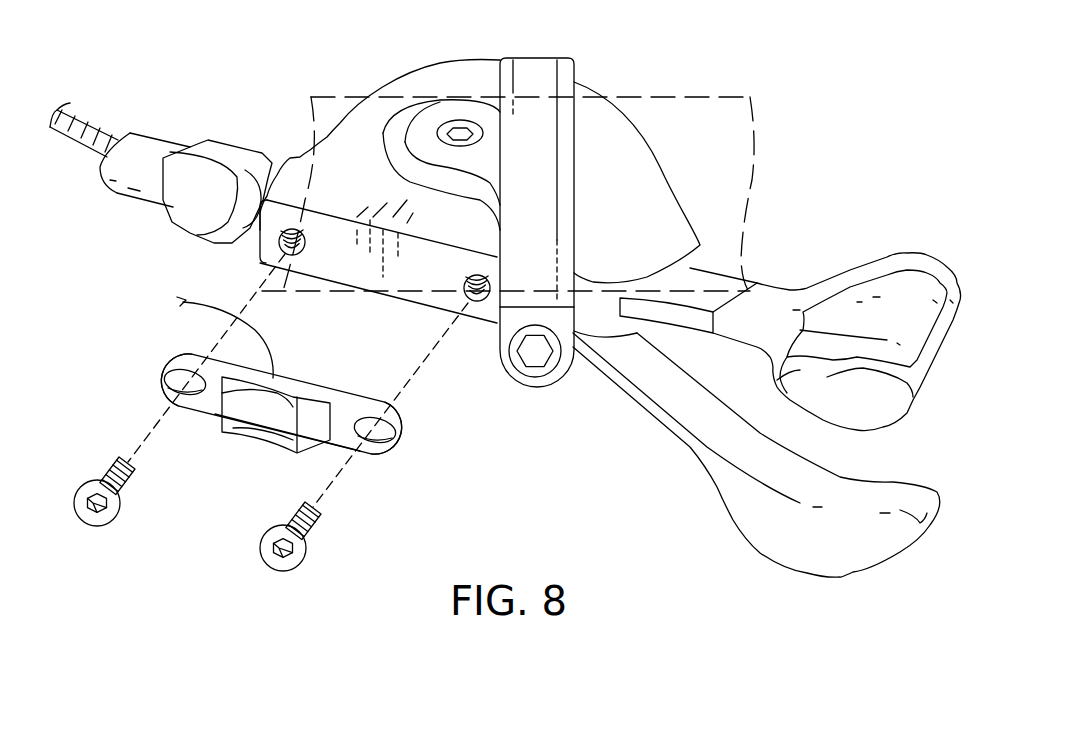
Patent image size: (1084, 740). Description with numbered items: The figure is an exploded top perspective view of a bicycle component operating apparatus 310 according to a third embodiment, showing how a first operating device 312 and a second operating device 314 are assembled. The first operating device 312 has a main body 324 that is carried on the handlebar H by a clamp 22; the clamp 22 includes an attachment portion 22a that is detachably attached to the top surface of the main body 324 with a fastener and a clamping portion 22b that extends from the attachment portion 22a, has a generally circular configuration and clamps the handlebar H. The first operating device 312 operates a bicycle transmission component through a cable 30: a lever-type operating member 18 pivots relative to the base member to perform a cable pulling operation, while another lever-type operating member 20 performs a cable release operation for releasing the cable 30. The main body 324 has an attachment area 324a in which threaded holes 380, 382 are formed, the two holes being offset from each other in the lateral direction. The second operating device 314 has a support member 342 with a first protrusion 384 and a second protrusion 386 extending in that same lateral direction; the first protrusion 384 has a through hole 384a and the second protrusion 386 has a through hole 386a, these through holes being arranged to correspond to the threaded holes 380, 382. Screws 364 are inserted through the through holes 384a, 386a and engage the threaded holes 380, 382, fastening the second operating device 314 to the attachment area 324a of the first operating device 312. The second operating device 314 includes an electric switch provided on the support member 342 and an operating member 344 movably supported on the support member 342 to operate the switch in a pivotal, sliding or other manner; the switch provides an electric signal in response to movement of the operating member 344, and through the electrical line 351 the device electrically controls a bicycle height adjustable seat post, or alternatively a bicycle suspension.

The bicycle component operating apparatus 310 is at (700, 58).
The first operating device 312 is at (378, 78).
The main body 324 is at (462, 62).
The attachment area 324a is at (267, 250).
The clamp 22 is at (585, 219).
The attachment portion 22a is at (427, 123).
The clamping portion 22b is at (530, 183).
The operating member 18 is at (870, 565).
The operating member 20 is at (860, 272).
The cable 30 is at (72, 104).
The electrical line 351 is at (175, 305).
The support member 342 is at (360, 397).
The operating member 344 is at (271, 440).
The second operating device 314 is at (228, 445).
The screws 364 is at (112, 524).
The threaded hole 380 is at (303, 268).
The threaded hole 382 is at (467, 290).
The first protrusion 384 is at (173, 352).
The through hole 384a is at (163, 384).
The second protrusion 386 is at (385, 448).
The through hole 386a is at (390, 430).
The handlebar H is at (333, 97).